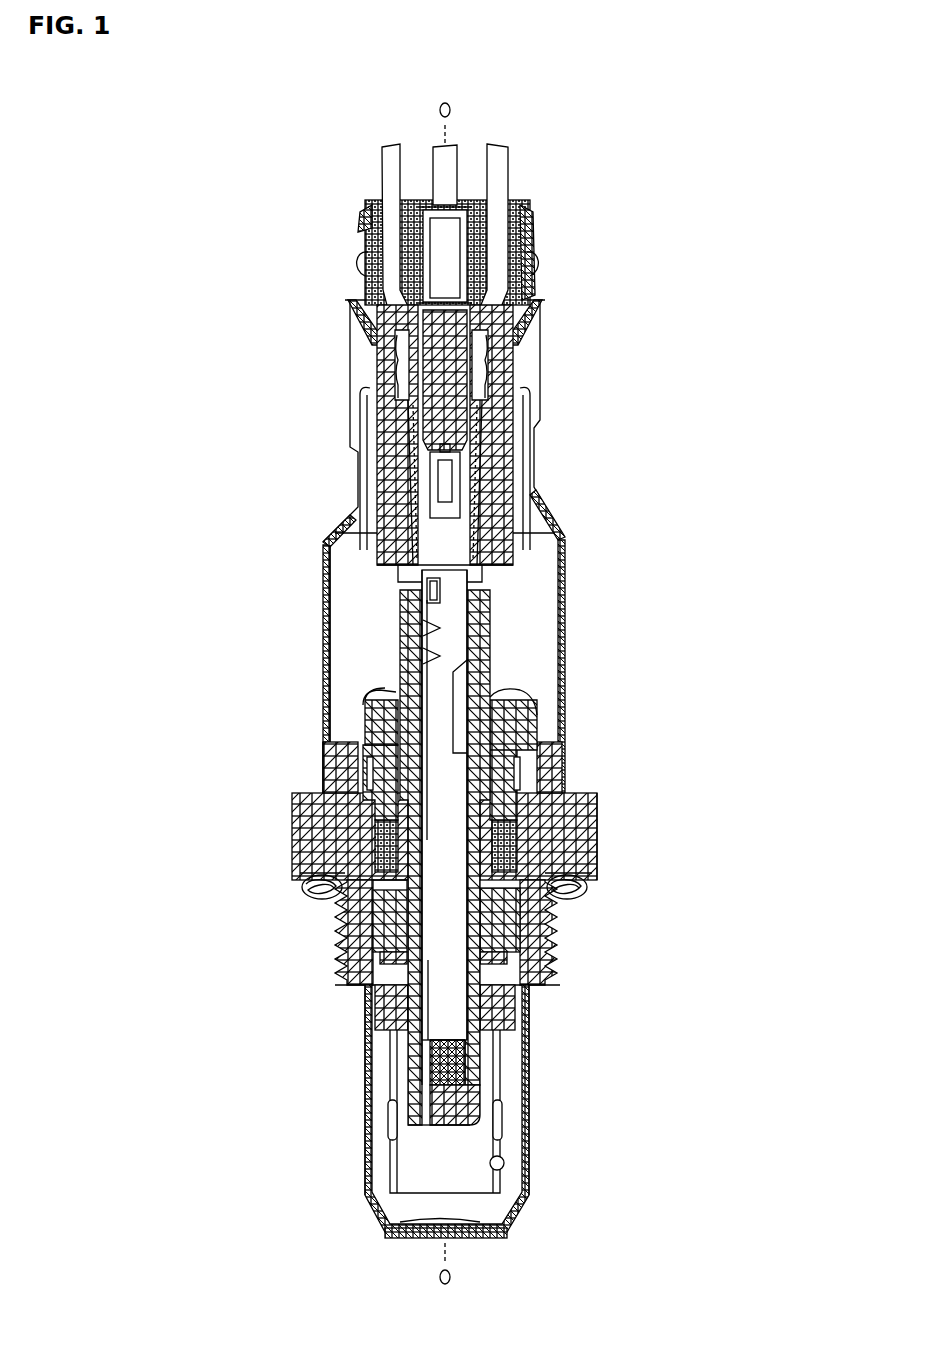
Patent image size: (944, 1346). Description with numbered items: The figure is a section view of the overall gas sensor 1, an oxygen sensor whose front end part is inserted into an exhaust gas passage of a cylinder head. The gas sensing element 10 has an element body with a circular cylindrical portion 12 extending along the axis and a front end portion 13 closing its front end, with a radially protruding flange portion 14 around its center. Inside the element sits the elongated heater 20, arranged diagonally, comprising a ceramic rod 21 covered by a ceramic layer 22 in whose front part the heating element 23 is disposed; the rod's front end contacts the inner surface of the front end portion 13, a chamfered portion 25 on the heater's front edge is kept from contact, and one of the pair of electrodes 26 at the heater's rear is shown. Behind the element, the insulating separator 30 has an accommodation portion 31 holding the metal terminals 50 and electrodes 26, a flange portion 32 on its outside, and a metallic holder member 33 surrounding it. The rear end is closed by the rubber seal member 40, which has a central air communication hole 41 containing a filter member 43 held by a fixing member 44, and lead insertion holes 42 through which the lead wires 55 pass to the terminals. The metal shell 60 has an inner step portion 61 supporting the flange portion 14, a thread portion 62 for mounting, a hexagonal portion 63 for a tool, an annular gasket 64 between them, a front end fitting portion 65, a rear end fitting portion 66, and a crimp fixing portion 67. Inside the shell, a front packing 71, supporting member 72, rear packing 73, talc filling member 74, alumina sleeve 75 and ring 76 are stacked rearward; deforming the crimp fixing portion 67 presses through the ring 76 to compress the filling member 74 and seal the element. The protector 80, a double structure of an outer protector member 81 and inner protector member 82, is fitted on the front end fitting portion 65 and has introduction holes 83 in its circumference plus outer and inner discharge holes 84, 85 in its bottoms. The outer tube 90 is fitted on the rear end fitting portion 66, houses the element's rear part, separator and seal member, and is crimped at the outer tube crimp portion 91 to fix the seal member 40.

The gas sensor 1 is at (634, 190).
The gas sensing element 10 is at (412, 1075).
The cylindrical portion 12 is at (482, 1067).
The front end portion 13 is at (445, 1127).
The flange portion 14 is at (392, 900).
The heater 20 is at (455, 1003).
The ceramic rod 21 is at (432, 1103).
The ceramic layer 22 is at (428, 975).
The heating element 23 is at (430, 1050).
The chamfered portion 25 is at (435, 1107).
The electrodes 26 is at (455, 508).
The separator 30 is at (372, 552).
The accommodation portion 31 is at (412, 520).
The flange portion 32 is at (362, 387).
The metallic holder member 33 is at (365, 470).
The seal member 40 is at (525, 193).
The air communication hole 41 is at (460, 203).
The lead insertion holes 42 is at (390, 262).
The filter member 43 is at (422, 216).
The fixing member 44 is at (447, 218).
The metal terminals 50 is at (406, 417).
The lead wires 55 is at (433, 152).
The metal shell 60 is at (598, 788).
The step portion 61 is at (482, 968).
The thread portion 62 is at (557, 947).
The hexagonal portion 63 is at (598, 832).
The gasket 64 is at (587, 882).
The front end fitting portion 65 is at (372, 1012).
The rear end fitting portion 66 is at (328, 760).
The crimp fixing portion 67 is at (378, 705).
The front packing 71 is at (407, 955).
The supporting member 72 is at (514, 920).
The rear packing 73 is at (590, 872).
The filling member 74 is at (377, 840).
The sleeve 75 is at (368, 718).
The ring 76 is at (503, 700).
The protector 80 is at (636, 1098).
The outer protector member 81 is at (527, 1100).
The inner protector member 82 is at (502, 1122).
The introduction holes 83 is at (506, 1167).
The outer discharge hole 84 is at (455, 1236).
The inner discharge hole 85 is at (442, 1228).
The outer tube 90 is at (572, 530).
The outer tube crimp portion 91 is at (530, 242).